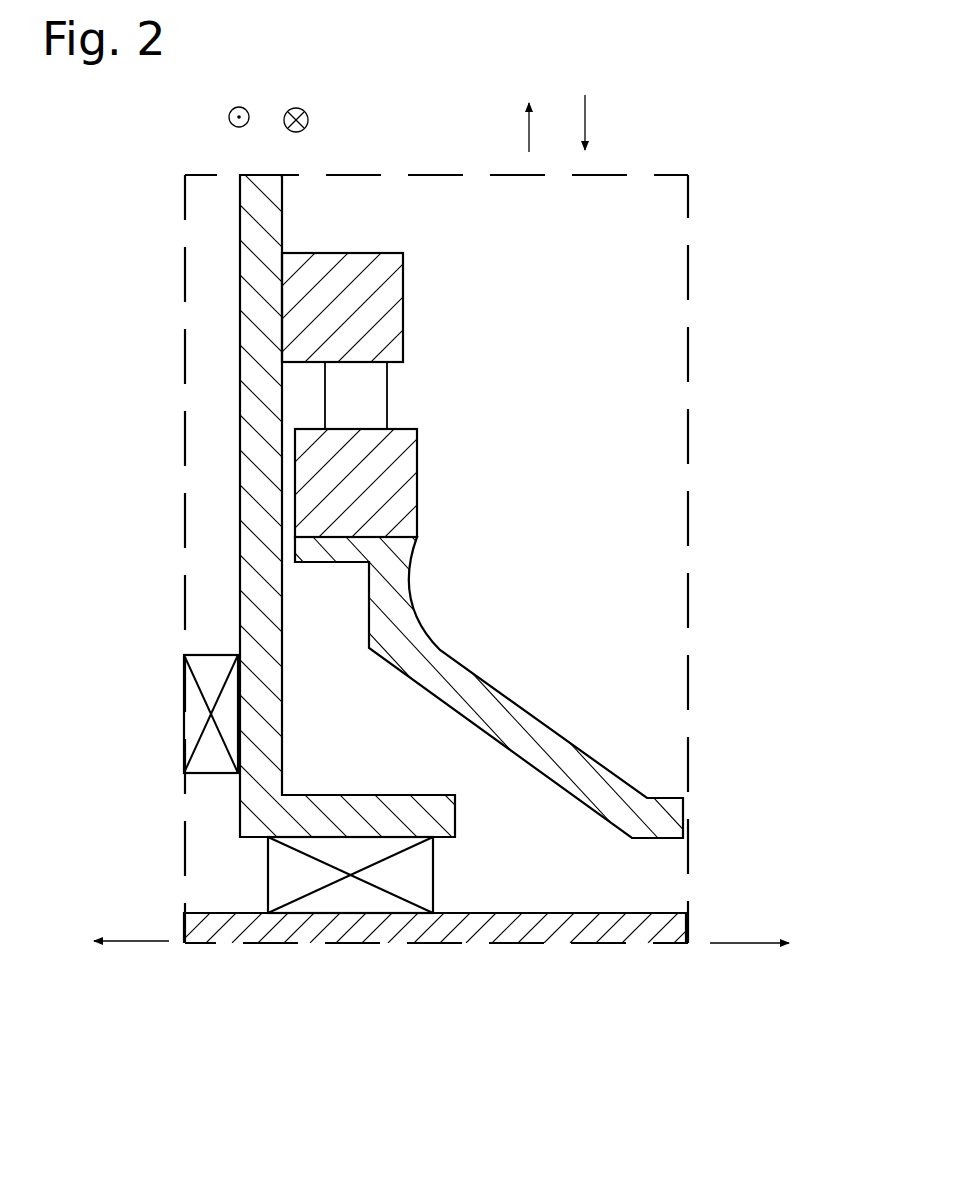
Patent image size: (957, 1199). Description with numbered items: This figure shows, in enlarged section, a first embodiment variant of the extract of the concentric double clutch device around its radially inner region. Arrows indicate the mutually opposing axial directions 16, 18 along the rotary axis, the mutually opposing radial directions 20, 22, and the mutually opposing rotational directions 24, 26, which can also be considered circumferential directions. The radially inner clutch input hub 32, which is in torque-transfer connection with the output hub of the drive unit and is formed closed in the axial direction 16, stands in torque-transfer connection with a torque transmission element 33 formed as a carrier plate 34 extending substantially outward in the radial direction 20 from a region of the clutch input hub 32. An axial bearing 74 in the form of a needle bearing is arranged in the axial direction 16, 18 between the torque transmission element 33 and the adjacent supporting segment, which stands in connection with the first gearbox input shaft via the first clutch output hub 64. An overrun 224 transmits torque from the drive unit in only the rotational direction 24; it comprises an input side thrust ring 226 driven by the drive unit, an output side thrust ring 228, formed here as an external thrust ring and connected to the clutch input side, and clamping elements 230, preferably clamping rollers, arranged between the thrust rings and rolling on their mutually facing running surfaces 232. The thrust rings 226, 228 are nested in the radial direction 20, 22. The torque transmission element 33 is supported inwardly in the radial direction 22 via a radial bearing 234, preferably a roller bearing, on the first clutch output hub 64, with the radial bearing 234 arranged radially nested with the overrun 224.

The axial direction 16 is at (745, 943).
The axial direction 18 is at (128, 941).
The radial direction 20 is at (526, 135).
The radial direction 22 is at (585, 112).
The rotational direction 24 is at (228, 117).
The rotational direction 26 is at (308, 116).
The clutch input hub 32 is at (645, 817).
The torque transmission element 33 is at (270, 507).
The carrier plate 34 is at (260, 275).
The first clutch output hub 64 is at (609, 929).
The axial bearing 74 is at (197, 715).
The overrun 224 is at (439, 395).
The input side thrust ring 226 is at (387, 469).
The output side thrust ring 228 is at (323, 321).
The clamping elements 230 is at (360, 397).
The running surfaces 232 is at (404, 366).
The radial bearing 234 is at (347, 893).